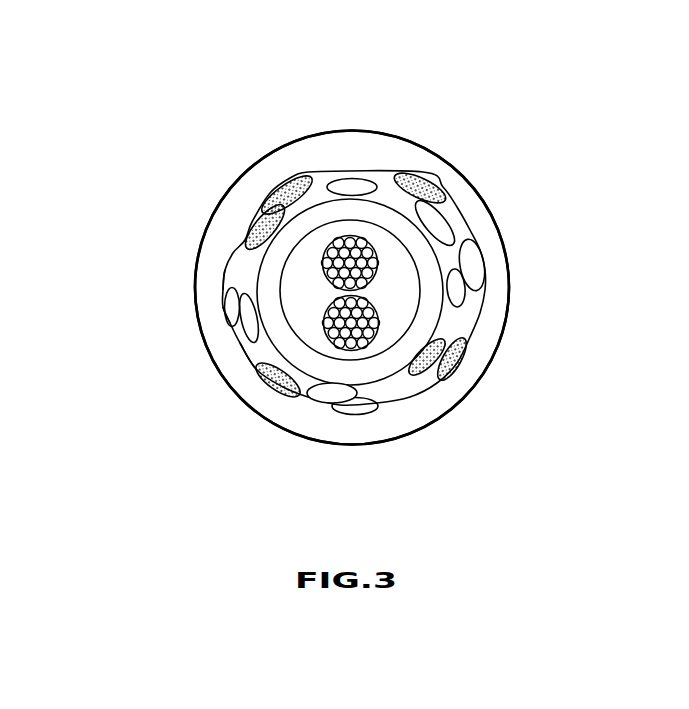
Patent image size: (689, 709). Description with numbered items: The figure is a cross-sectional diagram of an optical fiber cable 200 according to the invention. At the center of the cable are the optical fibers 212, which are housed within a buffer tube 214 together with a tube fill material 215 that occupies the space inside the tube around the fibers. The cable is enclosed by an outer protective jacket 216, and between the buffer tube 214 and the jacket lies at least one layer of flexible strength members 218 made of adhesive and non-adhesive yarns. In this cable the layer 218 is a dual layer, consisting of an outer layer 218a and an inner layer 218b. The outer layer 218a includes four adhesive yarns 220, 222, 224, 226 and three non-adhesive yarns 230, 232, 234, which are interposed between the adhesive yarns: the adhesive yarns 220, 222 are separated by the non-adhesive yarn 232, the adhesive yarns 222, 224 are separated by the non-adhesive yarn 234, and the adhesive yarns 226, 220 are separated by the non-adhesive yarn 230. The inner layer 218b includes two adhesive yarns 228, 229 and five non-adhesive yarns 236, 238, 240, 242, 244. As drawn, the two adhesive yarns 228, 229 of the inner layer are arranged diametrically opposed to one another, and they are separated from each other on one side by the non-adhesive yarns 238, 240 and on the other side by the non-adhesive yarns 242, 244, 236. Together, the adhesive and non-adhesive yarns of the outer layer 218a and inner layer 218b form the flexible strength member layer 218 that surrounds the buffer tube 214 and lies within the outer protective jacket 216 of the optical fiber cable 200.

The optical fiber cable 200 is at (146, 46).
The optical fibers 212 is at (357, 272).
The buffer tube 214 is at (321, 212).
The tube fill material 215 is at (402, 288).
The outer protective jacket 216 is at (408, 415).
The layer of flexible strength members 218 is at (240, 371).
The outer layer 218a is at (215, 301).
The inner layer 218b is at (233, 336).
The adhesive yarn 220 is at (432, 368).
The adhesive yarn 222 is at (283, 395).
The adhesive yarn 224 is at (287, 183).
The adhesive yarn 226 is at (425, 178).
The adhesive yarn 228 is at (263, 217).
The adhesive yarn 229 is at (450, 412).
The non-adhesive yarn 230 is at (470, 268).
The non-adhesive yarn 232 is at (357, 403).
The non-adhesive yarn 234 is at (233, 310).
The non-adhesive yarn 236 is at (458, 297).
The non-adhesive yarn 238 is at (332, 393).
The non-adhesive yarn 240 is at (252, 332).
The non-adhesive yarn 242 is at (352, 185).
The non-adhesive yarn 244 is at (440, 228).